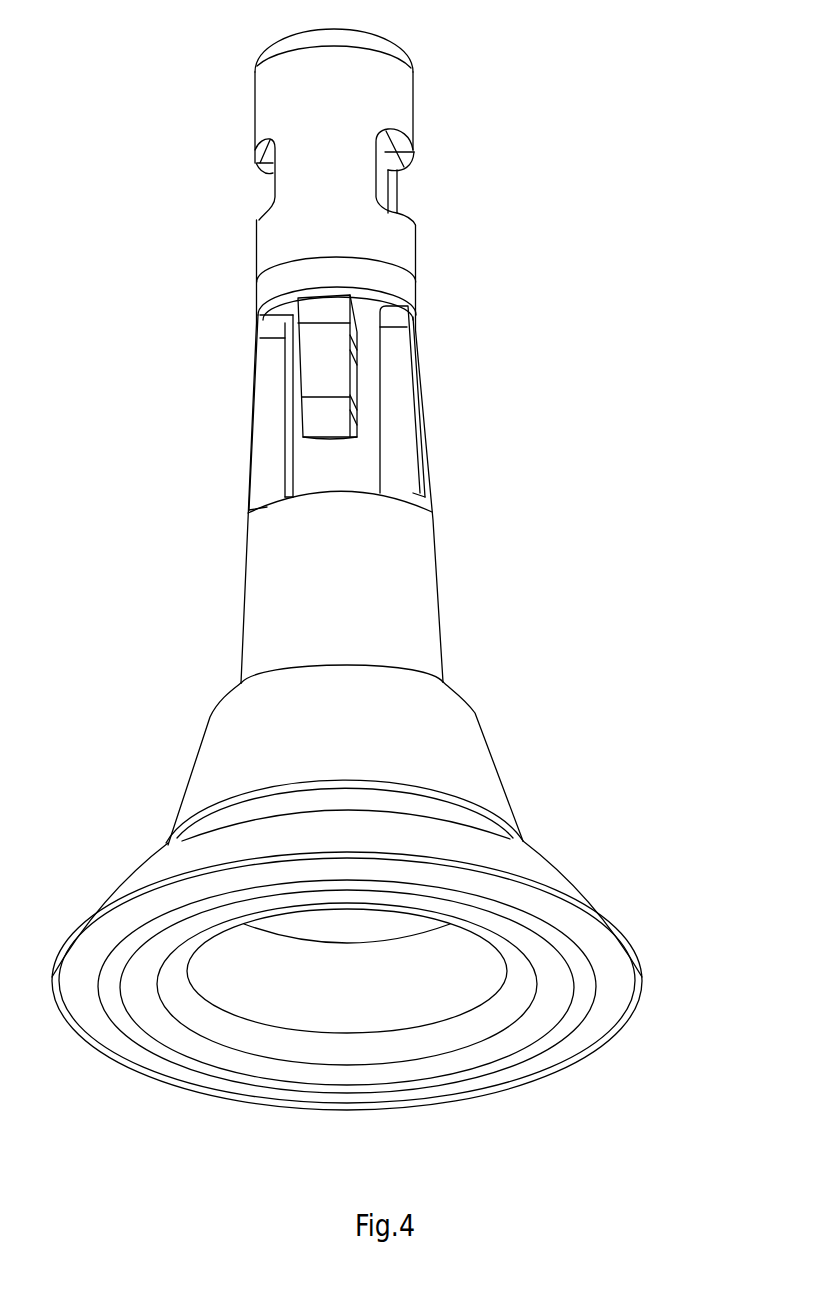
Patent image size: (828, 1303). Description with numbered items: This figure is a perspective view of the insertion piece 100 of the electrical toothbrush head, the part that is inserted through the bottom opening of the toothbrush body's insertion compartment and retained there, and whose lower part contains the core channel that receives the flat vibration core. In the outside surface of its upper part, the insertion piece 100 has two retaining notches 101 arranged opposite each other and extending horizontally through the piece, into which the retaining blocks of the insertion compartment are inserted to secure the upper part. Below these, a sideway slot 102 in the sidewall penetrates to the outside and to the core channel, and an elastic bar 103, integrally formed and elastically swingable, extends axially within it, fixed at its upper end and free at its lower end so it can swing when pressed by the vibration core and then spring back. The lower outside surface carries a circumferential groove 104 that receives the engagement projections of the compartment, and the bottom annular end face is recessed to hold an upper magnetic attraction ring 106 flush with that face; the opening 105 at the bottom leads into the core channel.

The insertion piece 100 is at (277, 580).
The retaining notches 101 is at (268, 195).
The sideway slot 102 is at (397, 382).
The elastic bar 103 is at (317, 368).
The circumferential groove 104 is at (447, 813).
The through hole 105 is at (458, 961).
The upper magnetic attraction ring 106 is at (580, 973).